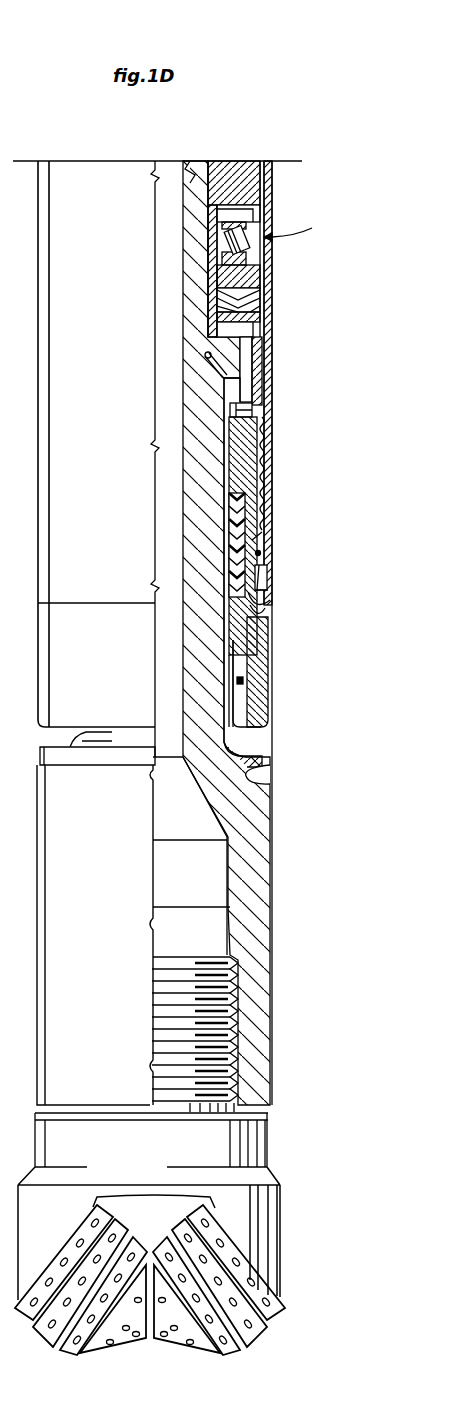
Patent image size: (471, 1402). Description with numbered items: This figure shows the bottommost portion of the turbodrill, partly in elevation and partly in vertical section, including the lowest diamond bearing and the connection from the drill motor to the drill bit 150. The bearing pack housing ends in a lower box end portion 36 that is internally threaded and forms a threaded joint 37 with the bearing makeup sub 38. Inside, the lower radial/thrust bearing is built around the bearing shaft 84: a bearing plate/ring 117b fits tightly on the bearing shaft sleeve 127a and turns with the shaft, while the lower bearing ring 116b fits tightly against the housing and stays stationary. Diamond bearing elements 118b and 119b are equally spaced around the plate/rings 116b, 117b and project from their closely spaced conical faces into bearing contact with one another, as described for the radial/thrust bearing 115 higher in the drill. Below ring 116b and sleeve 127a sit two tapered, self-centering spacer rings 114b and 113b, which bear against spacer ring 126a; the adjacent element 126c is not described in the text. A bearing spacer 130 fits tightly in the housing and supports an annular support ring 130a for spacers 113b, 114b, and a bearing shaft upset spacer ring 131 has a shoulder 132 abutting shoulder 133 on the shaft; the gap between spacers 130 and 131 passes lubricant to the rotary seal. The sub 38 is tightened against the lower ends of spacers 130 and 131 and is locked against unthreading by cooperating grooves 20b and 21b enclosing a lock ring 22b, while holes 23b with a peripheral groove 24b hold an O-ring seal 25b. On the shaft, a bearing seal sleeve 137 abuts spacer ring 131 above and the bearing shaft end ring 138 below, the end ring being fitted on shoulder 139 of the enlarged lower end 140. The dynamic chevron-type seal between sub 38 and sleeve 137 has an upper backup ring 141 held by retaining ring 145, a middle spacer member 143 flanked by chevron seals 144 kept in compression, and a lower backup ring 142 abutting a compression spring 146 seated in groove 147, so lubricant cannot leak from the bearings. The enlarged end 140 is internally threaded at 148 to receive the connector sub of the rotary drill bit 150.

The bearing shaft 84 is at (193, 420).
The spacer ring 126a is at (245, 178).
The housing cavity 126c is at (248, 210).
The bearing plate/ring 117b is at (225, 228).
The diamond bearing element 119b is at (230, 238).
The upper radial/thrust bearing 115 is at (305, 228).
The diamond bearing element 118b is at (258, 268).
The lower bearing ring 116b is at (250, 293).
The spacer ring 113b is at (258, 314).
The annular support ring 130a is at (253, 324).
The spacer ring 114b is at (215, 280).
The bearing shaft sleeve 127a is at (213, 313).
The bearing shaft upset spacer ring 131 is at (246, 392).
The bearing spacer 130 is at (258, 365).
The retaining ring 145 is at (252, 410).
The shoulder 133 is at (207, 357).
The shoulder 132 is at (235, 386).
The lower box end portion 36 is at (268, 490).
The threaded joint 37 is at (262, 470).
The upper backup ring 141 is at (238, 440).
The bearing seal sleeve 137 is at (226, 460).
The chevron seals 144 is at (235, 515).
The spacer member 143 is at (232, 545).
The O-ring seal 25b is at (256, 540).
The peripheral groove 24b is at (260, 553).
The groove 20b is at (263, 572).
The holes 23b is at (263, 586).
The lock ring 22b is at (263, 599).
The groove 21b is at (252, 606).
The bearing makeup sub 38 is at (260, 658).
The lower backup ring 142 is at (242, 680).
The compression spring 146 is at (252, 700).
The groove 147 is at (240, 677).
The bearing shaft end ring 138 is at (250, 745).
The shoulder 139 is at (262, 779).
The enlarged lower end 140 is at (258, 870).
The internal threads 148 is at (235, 1026).
The drill bit 150 is at (268, 1252).